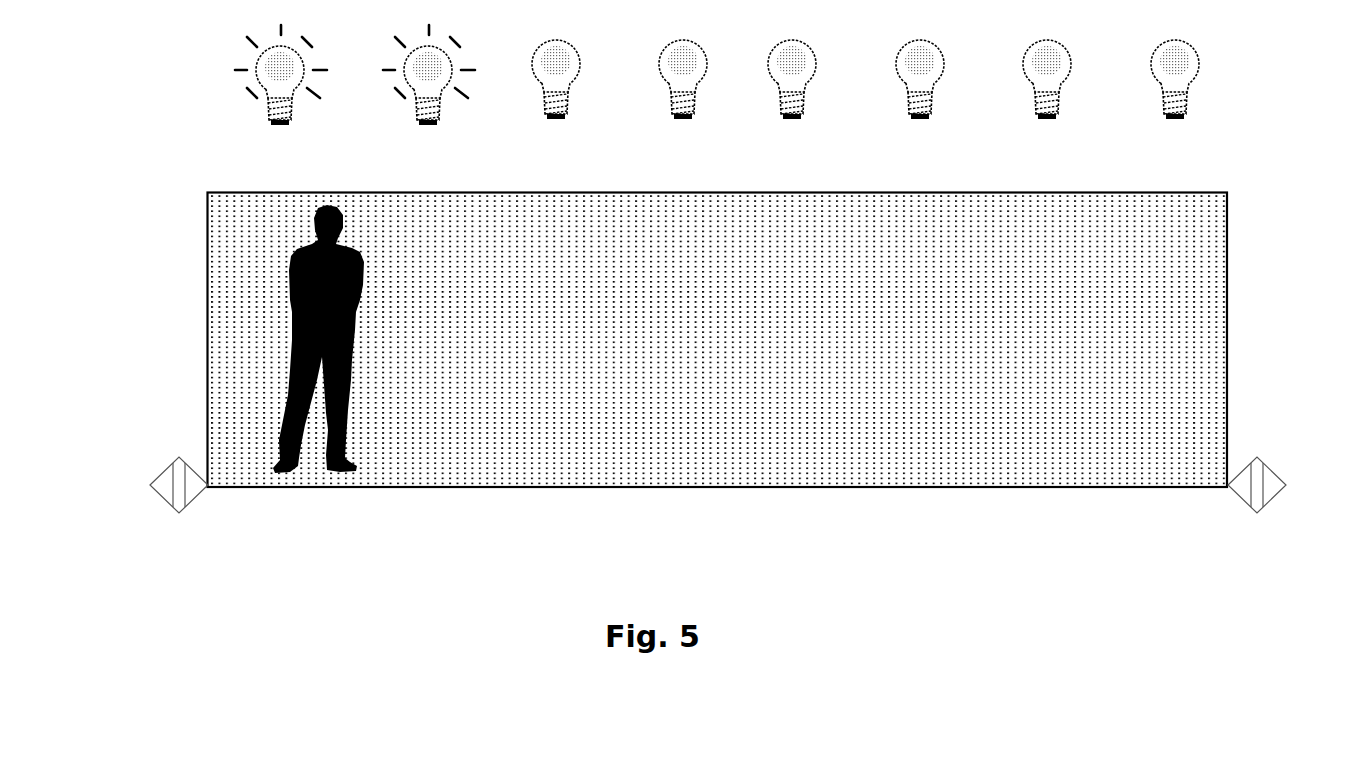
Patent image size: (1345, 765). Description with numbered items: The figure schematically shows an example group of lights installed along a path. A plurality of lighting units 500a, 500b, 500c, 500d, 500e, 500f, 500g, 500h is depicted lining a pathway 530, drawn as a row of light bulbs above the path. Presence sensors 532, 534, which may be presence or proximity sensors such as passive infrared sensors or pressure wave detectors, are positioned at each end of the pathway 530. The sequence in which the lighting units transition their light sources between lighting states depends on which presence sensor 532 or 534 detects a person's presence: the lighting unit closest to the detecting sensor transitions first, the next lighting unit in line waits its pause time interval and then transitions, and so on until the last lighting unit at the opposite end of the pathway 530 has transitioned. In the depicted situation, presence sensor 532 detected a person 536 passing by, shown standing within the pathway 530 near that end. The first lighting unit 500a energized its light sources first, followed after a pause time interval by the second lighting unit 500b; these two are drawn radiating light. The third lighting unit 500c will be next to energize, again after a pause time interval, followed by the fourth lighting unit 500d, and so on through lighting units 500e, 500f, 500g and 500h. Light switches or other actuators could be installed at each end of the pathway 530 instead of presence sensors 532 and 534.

The first lighting unit 500a is at (281, 95).
The second lighting unit 500b is at (429, 95).
The third lighting unit 500c is at (556, 100).
The fourth lighting unit 500d is at (684, 100).
The lighting unit 500e is at (793, 100).
The lighting unit 500f is at (920, 100).
The lighting unit 500g is at (1048, 100).
The lighting unit 500h is at (1176, 100).
The pathway 530 is at (718, 340).
The presence sensor 532 is at (167, 471).
The presence sensor 534 is at (1272, 471).
The person 536 is at (362, 282).